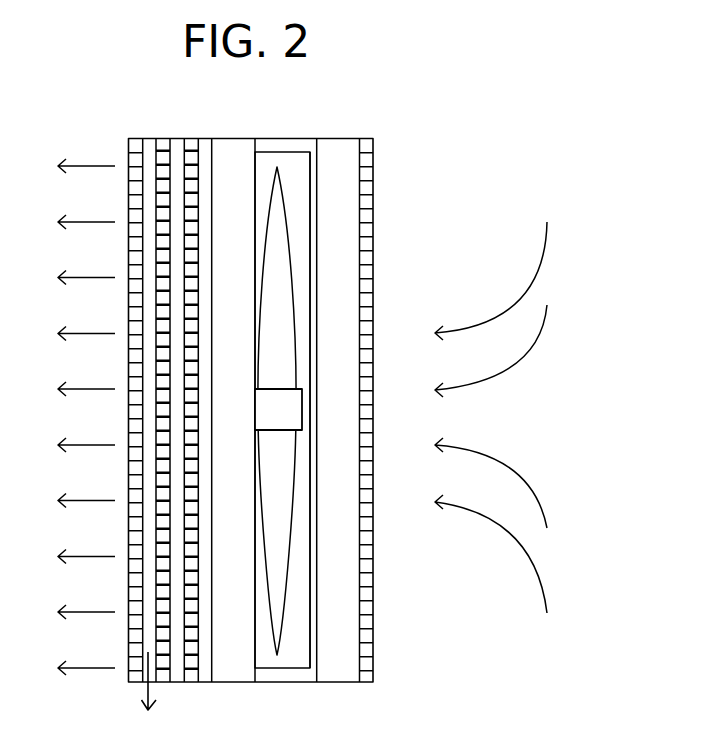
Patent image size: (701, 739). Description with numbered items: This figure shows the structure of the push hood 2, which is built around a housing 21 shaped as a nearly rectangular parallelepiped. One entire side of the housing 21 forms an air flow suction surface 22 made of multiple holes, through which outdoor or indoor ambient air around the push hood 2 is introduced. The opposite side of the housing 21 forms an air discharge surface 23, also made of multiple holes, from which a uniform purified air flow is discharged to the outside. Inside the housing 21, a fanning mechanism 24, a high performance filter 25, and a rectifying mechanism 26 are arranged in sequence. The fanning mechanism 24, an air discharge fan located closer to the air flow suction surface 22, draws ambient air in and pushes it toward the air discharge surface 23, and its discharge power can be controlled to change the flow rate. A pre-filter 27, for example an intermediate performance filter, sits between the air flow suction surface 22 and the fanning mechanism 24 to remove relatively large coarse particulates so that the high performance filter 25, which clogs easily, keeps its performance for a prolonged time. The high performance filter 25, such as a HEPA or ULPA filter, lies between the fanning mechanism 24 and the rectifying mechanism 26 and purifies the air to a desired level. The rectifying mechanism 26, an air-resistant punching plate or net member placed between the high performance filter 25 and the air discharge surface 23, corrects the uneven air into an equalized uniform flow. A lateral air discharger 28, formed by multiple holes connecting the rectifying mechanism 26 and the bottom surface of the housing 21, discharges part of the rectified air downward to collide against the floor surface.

The push hood 2 is at (401, 150).
The housing 21 is at (282, 138).
The air flow suction surface 22 is at (372, 345).
The air discharge surface 23 is at (128, 148).
The fanning mechanism 24 is at (290, 248).
The high performance filter 25 is at (212, 637).
The rectifying mechanism 26 is at (193, 132).
The pre-filter 27 is at (323, 658).
The lateral air discharger 28 is at (147, 652).